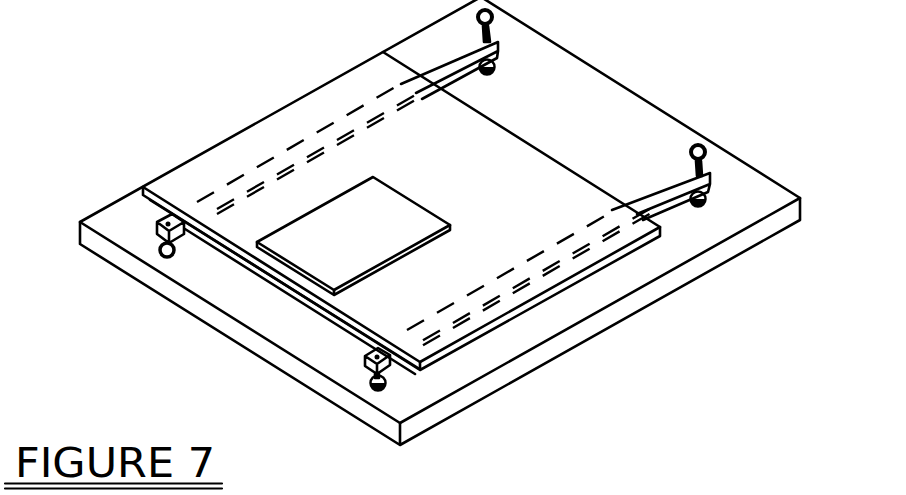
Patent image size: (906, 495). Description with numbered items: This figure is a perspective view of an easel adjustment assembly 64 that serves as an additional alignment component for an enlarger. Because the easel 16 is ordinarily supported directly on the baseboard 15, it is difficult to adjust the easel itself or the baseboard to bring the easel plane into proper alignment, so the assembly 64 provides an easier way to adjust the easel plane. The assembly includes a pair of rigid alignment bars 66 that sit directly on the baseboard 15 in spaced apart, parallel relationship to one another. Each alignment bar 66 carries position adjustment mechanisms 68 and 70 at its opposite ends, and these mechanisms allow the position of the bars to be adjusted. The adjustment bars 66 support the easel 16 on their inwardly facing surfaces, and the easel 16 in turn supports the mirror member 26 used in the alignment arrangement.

The baseboard 15 is at (567, 50).
The easel adjustment assembly 64 is at (163, 121).
The rigid alignment bars 66 is at (157, 222).
The position adjustment mechanism 68 is at (743, 157).
The easel 16 is at (302, 266).
The mirror member 26 is at (355, 339).
The position adjustment mechanism 70 is at (354, 344).